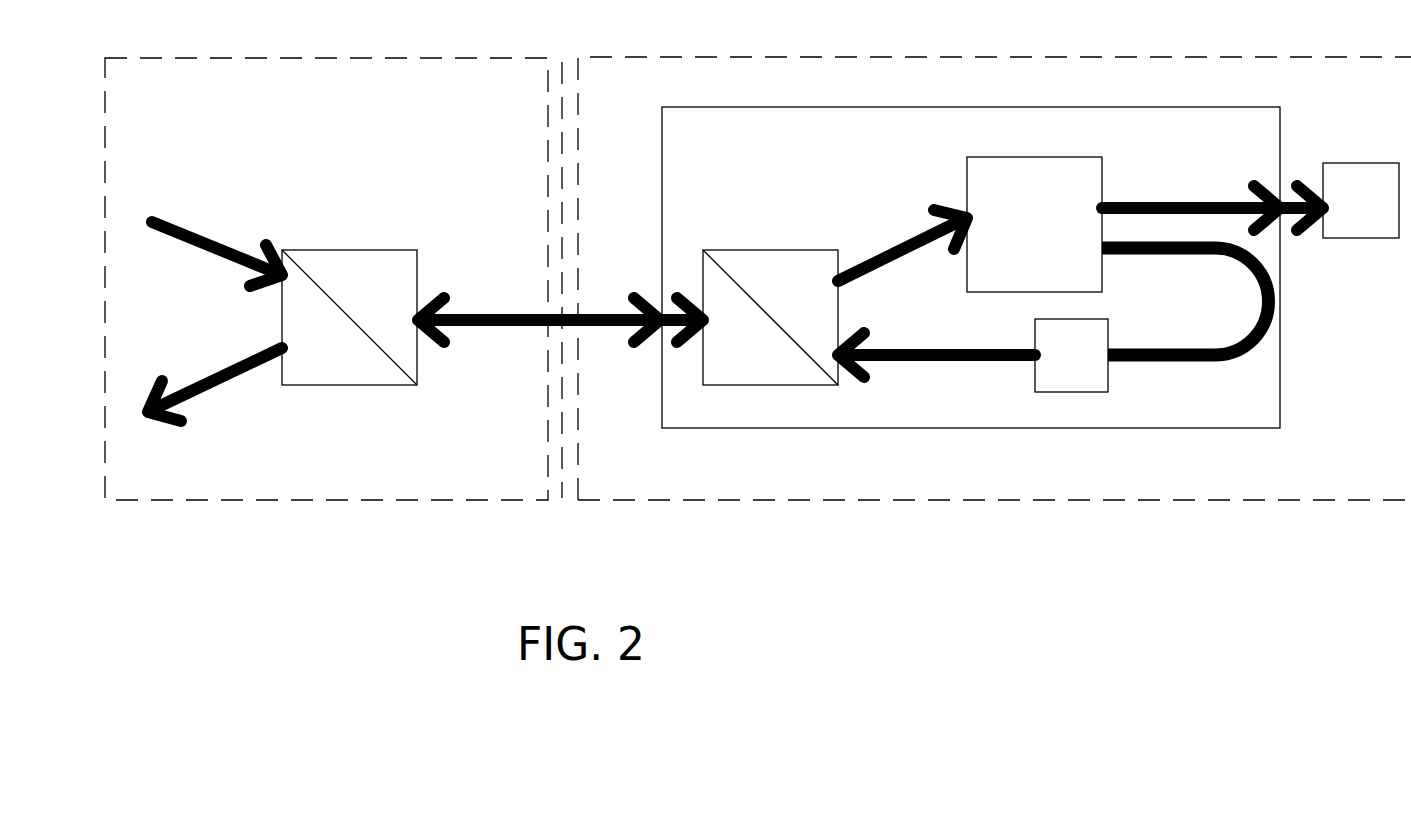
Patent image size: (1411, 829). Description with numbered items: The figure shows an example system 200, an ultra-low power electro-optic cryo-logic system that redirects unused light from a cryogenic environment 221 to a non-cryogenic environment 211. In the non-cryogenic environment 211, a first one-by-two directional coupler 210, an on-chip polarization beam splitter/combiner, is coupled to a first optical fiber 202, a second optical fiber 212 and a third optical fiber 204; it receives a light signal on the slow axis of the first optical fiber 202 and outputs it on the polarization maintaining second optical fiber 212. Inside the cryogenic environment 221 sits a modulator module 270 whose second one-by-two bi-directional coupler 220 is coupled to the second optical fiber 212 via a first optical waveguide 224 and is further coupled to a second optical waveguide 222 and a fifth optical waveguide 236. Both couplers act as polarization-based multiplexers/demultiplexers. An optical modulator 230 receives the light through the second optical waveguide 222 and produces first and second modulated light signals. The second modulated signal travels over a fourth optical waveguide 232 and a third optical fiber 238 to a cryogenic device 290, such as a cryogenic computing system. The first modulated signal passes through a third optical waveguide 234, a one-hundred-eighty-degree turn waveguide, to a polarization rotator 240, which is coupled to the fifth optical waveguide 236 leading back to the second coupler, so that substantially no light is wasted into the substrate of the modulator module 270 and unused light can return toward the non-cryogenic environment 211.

The system 200 is at (324, 34).
The non-cryogenic environment 211 is at (326, 279).
The cryogenic environment 221 is at (986, 278).
The modulator module 270 is at (836, 107).
The first 1×2 directional coupler 210 is at (350, 250).
The first optical fiber 202 is at (197, 253).
The third optical fiber 204 is at (215, 378).
The second optical fiber 212 is at (553, 318).
The first optical waveguide 224 is at (668, 328).
The second 1×2 bi-directional coupler 220 is at (785, 250).
The second optical waveguide 222 is at (912, 243).
The optical modulator 230 is at (1028, 157).
The fourth optical waveguide 232 is at (1188, 202).
The third optical fiber 238 is at (1291, 216).
The cryogenic device 290 is at (1361, 200).
The third optical waveguide 234 is at (1188, 362).
The polarization rotator 240 is at (1070, 392).
The fifth optical waveguide 236 is at (968, 360).